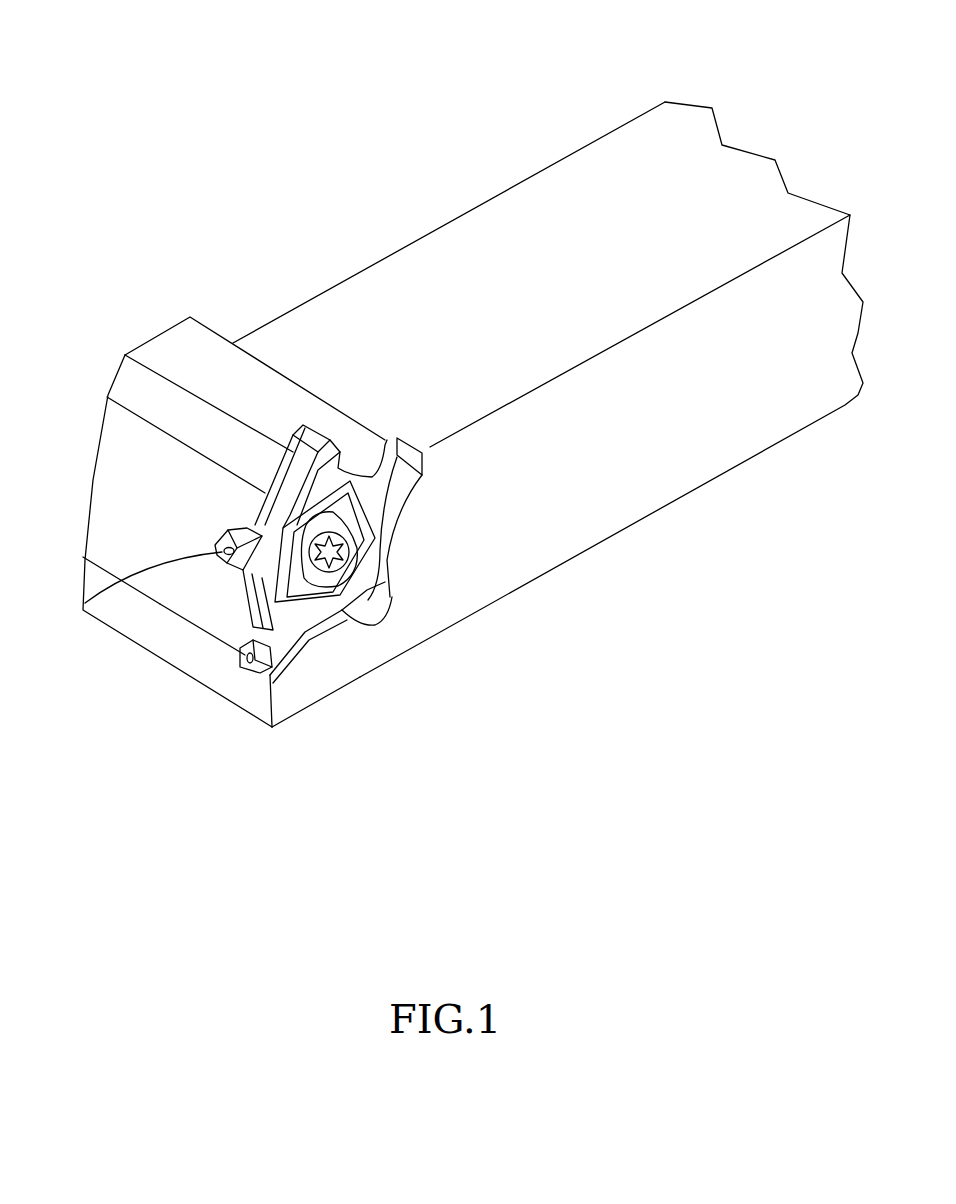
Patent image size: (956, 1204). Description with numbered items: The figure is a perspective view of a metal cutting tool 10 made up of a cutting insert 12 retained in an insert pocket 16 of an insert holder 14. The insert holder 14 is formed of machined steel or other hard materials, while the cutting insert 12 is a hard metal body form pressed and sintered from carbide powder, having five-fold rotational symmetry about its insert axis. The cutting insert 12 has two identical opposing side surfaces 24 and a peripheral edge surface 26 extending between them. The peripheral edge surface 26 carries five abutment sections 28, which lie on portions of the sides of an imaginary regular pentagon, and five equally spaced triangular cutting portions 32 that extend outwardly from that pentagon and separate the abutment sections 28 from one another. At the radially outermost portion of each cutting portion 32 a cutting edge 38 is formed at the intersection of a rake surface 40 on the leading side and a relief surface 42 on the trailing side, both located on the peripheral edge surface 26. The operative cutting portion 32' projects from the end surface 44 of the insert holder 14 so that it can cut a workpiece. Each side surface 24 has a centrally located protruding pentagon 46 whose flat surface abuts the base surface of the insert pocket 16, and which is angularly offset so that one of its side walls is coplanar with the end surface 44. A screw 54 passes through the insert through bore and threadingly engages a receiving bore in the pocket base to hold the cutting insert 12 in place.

The metal cutting tool 10 is at (430, 150).
The cutting insert 12 is at (303, 617).
The insert holder 14 is at (702, 418).
The insert pocket 16 is at (262, 742).
The side surfaces 24 is at (365, 583).
The peripheral edge surface 26 is at (298, 472).
The abutment sections 28 is at (267, 498).
The cutting portions 32 is at (296, 500).
The operative cutting portion 32' is at (102, 612).
The cutting edge 38 is at (221, 572).
The rake surface 40 is at (224, 548).
The relief surface 42 is at (293, 432).
The end surface 44 is at (148, 547).
The protruding pentagon 46 is at (367, 537).
The screw 54 is at (380, 622).